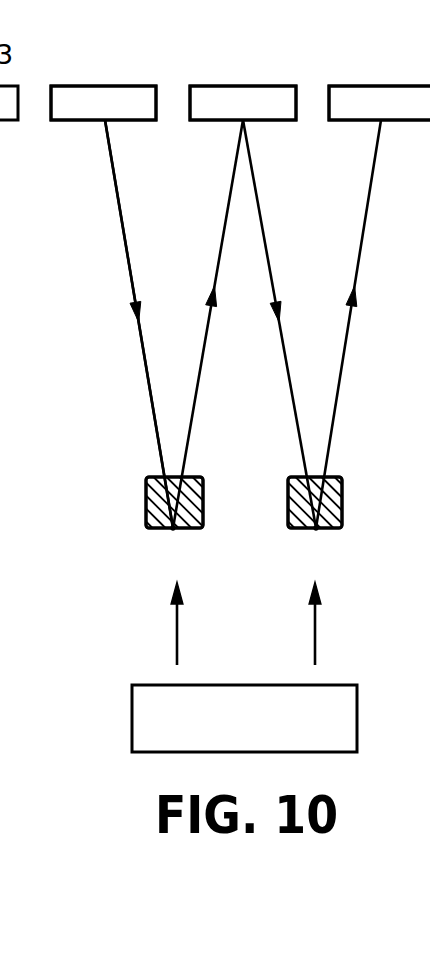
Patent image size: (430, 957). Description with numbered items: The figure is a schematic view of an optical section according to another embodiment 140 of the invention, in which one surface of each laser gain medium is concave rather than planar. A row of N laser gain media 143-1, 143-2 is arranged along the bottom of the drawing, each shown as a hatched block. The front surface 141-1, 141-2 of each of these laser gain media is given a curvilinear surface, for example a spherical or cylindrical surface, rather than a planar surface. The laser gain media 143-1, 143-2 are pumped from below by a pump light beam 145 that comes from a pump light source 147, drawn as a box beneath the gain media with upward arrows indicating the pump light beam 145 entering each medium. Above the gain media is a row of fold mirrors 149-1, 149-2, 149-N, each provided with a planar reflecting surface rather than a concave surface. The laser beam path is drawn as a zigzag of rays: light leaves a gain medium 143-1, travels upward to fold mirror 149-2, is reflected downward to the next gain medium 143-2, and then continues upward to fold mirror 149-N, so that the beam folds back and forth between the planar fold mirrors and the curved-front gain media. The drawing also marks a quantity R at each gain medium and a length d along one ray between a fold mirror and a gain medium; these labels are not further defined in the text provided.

The embodiment of the invention 140 is at (290, 40).
The fold mirror 149-1 is at (100, 86).
The fold mirror 149-2 is at (224, 86).
The fold mirror 149-N is at (359, 86).
The laser gain medium 143-1 is at (148, 480).
The laser gain medium 143-2 is at (292, 480).
The front surface 141-1 is at (157, 540).
The front surface 141-2 is at (285, 531).
The pump light beam 145 is at (314, 640).
The pump light source 147 is at (336, 685).
The reflection point R is at (177, 530).
The distance d is at (126, 324).